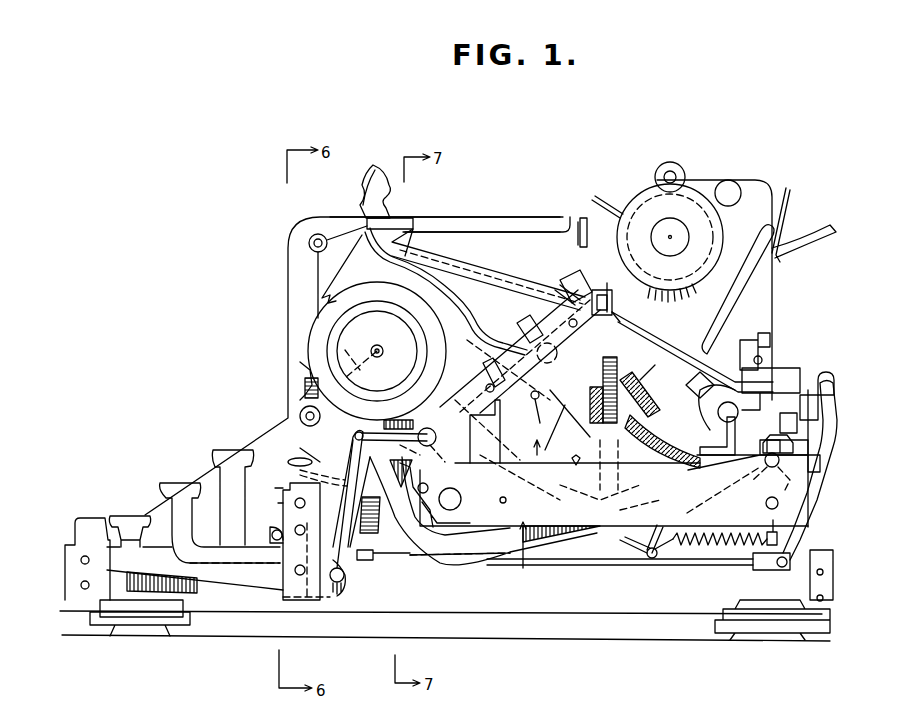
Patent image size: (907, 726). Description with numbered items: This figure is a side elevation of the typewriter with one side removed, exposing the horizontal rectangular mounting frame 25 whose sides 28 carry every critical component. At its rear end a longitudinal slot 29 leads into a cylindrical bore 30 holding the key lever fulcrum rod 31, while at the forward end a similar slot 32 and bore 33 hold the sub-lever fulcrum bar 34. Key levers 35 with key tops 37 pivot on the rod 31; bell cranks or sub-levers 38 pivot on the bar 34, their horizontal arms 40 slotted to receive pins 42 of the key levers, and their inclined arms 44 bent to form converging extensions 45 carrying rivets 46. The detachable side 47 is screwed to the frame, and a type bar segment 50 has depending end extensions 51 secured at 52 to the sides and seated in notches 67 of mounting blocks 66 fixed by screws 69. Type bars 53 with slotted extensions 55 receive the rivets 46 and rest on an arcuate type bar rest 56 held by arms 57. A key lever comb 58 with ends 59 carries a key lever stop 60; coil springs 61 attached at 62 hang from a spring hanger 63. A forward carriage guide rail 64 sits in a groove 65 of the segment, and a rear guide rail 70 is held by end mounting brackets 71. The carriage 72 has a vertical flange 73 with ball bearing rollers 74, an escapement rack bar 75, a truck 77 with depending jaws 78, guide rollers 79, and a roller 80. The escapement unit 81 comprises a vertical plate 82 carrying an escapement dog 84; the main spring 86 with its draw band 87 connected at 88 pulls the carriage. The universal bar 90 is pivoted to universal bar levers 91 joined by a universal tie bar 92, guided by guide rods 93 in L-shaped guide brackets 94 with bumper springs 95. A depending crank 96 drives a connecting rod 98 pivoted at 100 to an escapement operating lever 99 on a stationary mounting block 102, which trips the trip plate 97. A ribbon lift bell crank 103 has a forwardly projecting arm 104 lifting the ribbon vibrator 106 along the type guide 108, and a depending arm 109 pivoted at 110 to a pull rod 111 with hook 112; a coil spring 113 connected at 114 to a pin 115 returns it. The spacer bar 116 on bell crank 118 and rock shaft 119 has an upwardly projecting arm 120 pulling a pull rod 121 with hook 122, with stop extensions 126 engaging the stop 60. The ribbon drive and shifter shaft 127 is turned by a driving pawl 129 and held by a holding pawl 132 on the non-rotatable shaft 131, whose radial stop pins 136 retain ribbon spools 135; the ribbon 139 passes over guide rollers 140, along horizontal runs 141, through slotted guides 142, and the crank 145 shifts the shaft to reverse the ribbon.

The horizontal rectangular support or mounting frame 25 is at (519, 556).
The sides of mounting frame 28 is at (728, 547).
The longitudinal slot 29 is at (808, 455).
The cylindrical bore 30 is at (766, 477).
The key lever fulcrum rod 31 is at (782, 495).
The slot 32 is at (364, 504).
The cylindrical bore 33 is at (433, 490).
The sub-lever fulcrum bar 34 is at (445, 522).
The key levers 35 is at (552, 542).
The key tops 37 is at (213, 452).
The bell cranks or sub-levers 38 is at (520, 474).
The forwardly extending arms 40 is at (305, 446).
The rivets or pins 42 is at (305, 460).
The upwardly and rearwardly inclined arms 44 is at (502, 367).
The converging inclined extensions 45 is at (343, 458).
The rivets or pins 46 is at (522, 333).
The detachable side 47 is at (298, 277).
The type bar segment 50 is at (618, 322).
The depending end extensions 51 is at (570, 413).
The securing points 52 is at (574, 328).
The type bars 53 is at (442, 293).
The slotted extensions 55 is at (561, 353).
The arcuate type bar rest 56 is at (362, 222).
The arms 57 is at (490, 275).
The key lever comb 58 is at (283, 490).
The ends of comb 59 is at (302, 600).
The key lever stop 60 is at (283, 508).
The retractile coil springs 61 is at (613, 385).
The spring attachment points 62 is at (600, 488).
The spring hanger 63 is at (640, 336).
The forward carriage guide rail or channel 64 is at (562, 298).
The groove 65 is at (612, 305).
The adapters or mounting blocks 66 is at (547, 459).
The notches or seats 67 is at (557, 429).
The screws 69 is at (533, 436).
The rear carriage guide rail 70 is at (712, 422).
The end mounting brackets 71 is at (727, 440).
The carriage 72 is at (775, 180).
The forward vertical flange 73 is at (623, 283).
The ball bearing rollers 74 is at (575, 280).
The escapement rack bar 75 is at (795, 358).
The truck 77 is at (818, 400).
The depending jaws 78 is at (700, 380).
The ball bearing guide rollers 79 is at (752, 362).
The roller 80 is at (655, 187).
The escapement unit 81 is at (805, 424).
The vertical plate 82 is at (805, 440).
The escapement dog 84 is at (800, 375).
The main spring 86 is at (658, 390).
The flexible draw band 87 is at (652, 394).
The draw band connection 88 is at (738, 289).
The universal bar 90 is at (486, 370).
The universal bar levers or cranks 91 is at (472, 395).
The universal tie bar 92 is at (470, 410).
The guide rods 93 is at (617, 465).
The L-shaped guide brackets 94 is at (640, 508).
The bumper springs 95 is at (710, 510).
The depending crank 96 is at (373, 521).
The trip plate 97 is at (834, 389).
The connecting rod 98 is at (405, 559).
The escapement operating lever 99 is at (836, 540).
The pivot connection 100 is at (775, 572).
The stationary mounting block 102 is at (822, 470).
The ribbon lift bell crank 103 is at (700, 476).
The forwardly projecting arm 104 is at (662, 441).
The ribbon vibrator or guide 106 is at (580, 240).
The type guide 108 is at (600, 200).
The depending arm 109 is at (657, 560).
The pivot 110 is at (641, 560).
The pull rod 111 is at (521, 503).
The hook 112 is at (437, 472).
The retractile coil spring 113 is at (692, 566).
The spring connection 114 is at (625, 553).
The pin 115 is at (785, 526).
The spacer bar 116 is at (93, 516).
The bell crank 118 is at (229, 585).
The rock shaft 119 is at (345, 577).
The upwardly projecting arm 120 is at (322, 474).
The pull rod 121 is at (380, 430).
The hook 122 is at (415, 451).
The stop extensions 126 is at (270, 530).
The ribbon drive and shifter shaft 127 is at (377, 345).
The driving pawl 129 is at (393, 418).
The non-rotatable shaft 131 is at (300, 412).
The braking or holding pawl 132 is at (300, 372).
The ribbon spools 135 is at (325, 318).
The radial stop pins 136 is at (305, 390).
The ribbon 139 is at (449, 222).
The guide rollers 140 is at (316, 233).
The horizontal runs 141 is at (512, 231).
The slotted guides 142 is at (576, 218).
The crank 145 is at (355, 356).